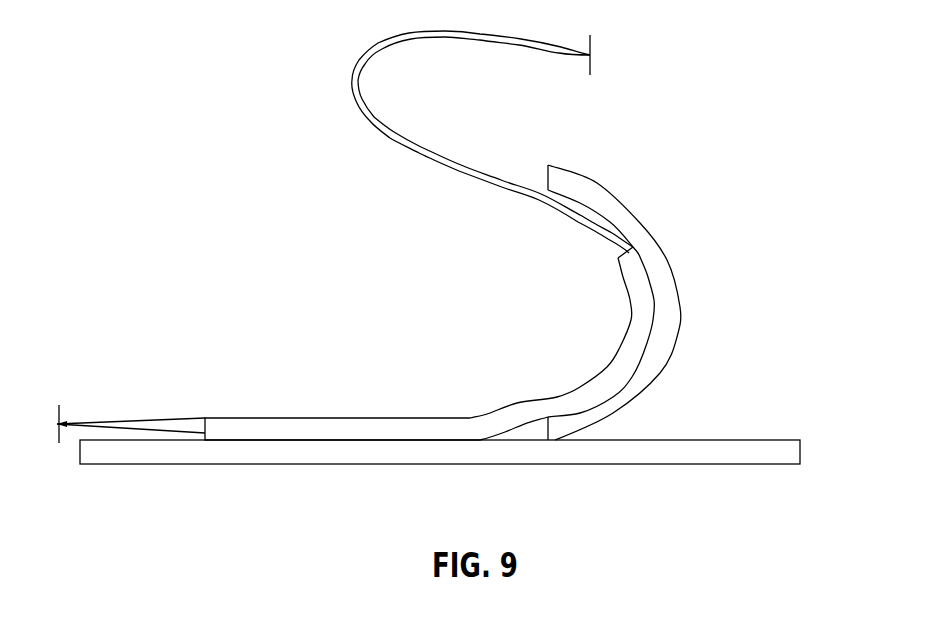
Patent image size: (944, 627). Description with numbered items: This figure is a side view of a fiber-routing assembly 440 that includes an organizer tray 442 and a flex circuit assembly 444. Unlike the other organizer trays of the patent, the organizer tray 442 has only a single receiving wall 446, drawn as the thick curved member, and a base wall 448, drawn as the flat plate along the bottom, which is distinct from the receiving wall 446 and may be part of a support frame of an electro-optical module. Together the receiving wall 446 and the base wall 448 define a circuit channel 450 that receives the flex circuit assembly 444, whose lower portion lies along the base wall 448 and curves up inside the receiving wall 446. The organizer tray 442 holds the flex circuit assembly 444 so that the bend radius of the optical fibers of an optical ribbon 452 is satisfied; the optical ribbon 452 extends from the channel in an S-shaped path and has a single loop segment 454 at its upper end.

The fiber-routing assembly 440 is at (714, 176).
The organizer tray 442 is at (717, 306).
The flex circuit assembly 444 is at (494, 362).
The receiving wall 446 is at (665, 358).
The base wall 448 is at (308, 464).
The circuit channel 450 is at (562, 294).
The optical ribbon 452 is at (472, 168).
The loop segment 454 is at (338, 77).